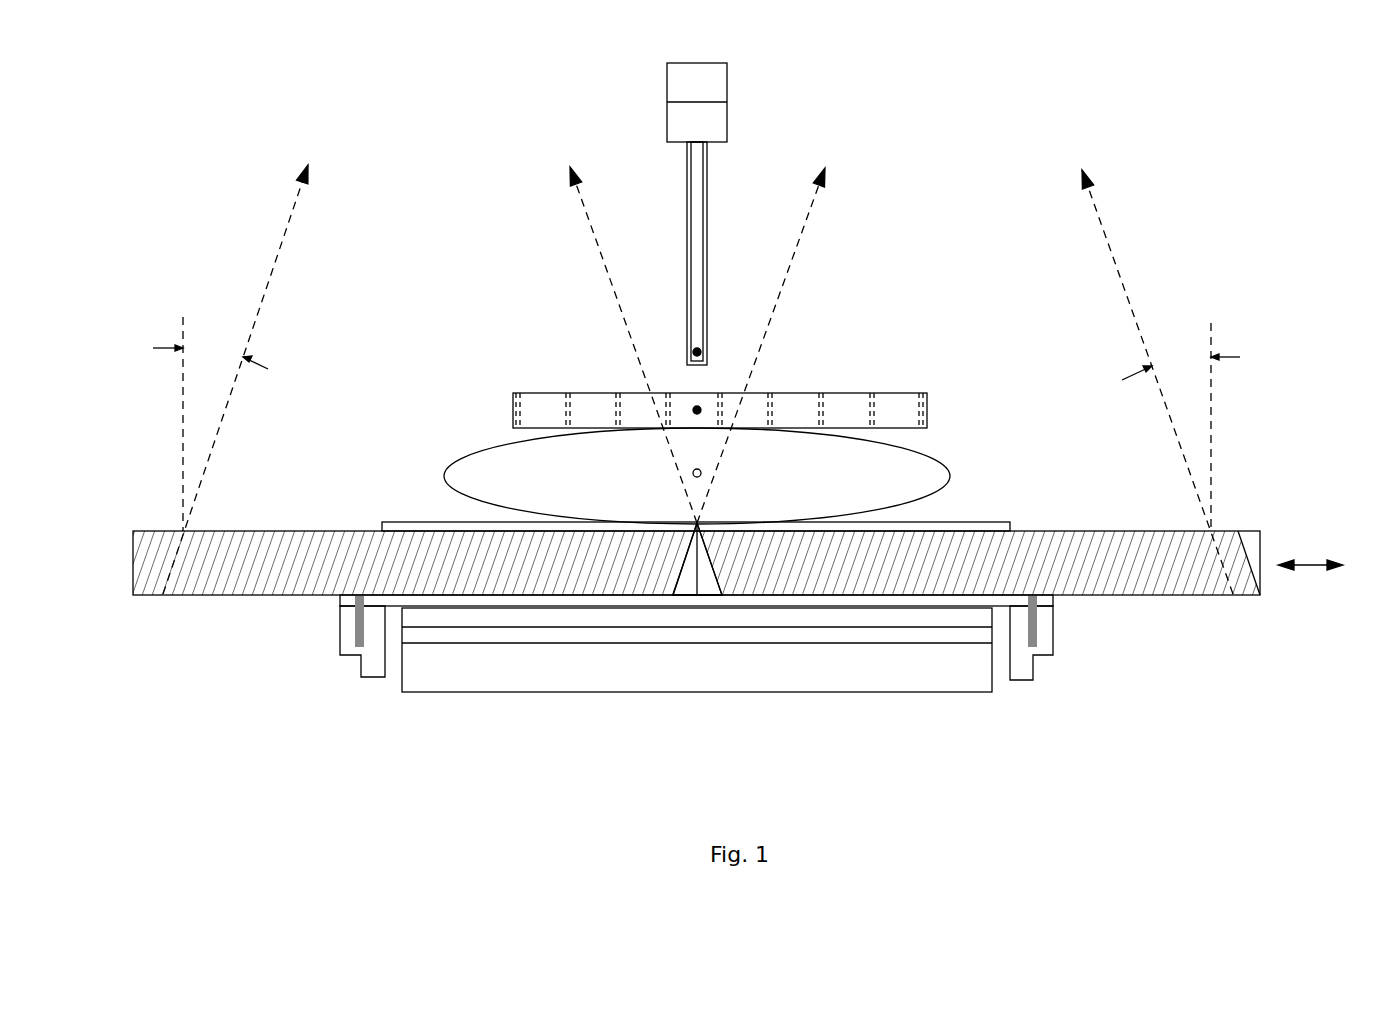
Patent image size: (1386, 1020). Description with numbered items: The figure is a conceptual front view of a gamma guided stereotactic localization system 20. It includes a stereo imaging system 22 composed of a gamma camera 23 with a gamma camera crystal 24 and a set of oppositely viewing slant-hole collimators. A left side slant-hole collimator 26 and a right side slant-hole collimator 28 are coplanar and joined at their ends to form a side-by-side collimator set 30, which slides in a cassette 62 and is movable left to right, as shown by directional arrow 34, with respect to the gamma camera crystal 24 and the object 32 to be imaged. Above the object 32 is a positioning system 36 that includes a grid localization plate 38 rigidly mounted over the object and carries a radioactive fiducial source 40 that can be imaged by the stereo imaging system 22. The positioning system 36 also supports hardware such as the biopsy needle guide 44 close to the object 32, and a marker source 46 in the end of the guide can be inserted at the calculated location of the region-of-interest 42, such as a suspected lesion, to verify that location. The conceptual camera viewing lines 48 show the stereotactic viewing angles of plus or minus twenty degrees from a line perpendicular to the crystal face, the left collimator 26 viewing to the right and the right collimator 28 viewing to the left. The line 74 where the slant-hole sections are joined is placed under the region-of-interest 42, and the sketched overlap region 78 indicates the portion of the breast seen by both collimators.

The gamma guided stereotactic localization system 20 is at (224, 186).
The stereo imaging system 22 is at (229, 631).
The gamma camera 23 is at (901, 681).
The gamma camera crystal 24 is at (698, 633).
The left side slant-hole collimator 26 is at (270, 578).
The right side slant-hole collimator 28 is at (1113, 573).
The side-by-side collimator set 30 is at (1192, 597).
The object to be imaged 32 is at (920, 458).
The directional arrow 34 is at (1308, 565).
The positioning system 36 is at (959, 379).
The grid localization system or plate 38 is at (513, 412).
The radioactive fiducial source 40 is at (700, 406).
The region-of-interest 42 is at (705, 468).
The biopsy needle guide 44 is at (727, 95).
The marker source 46 is at (691, 350).
The conceptual camera viewing lines 48 is at (268, 278).
The cassette 62 is at (952, 600).
The line where the slant-hole sections are joined 74 is at (697, 562).
The overlap region 78 is at (688, 448).